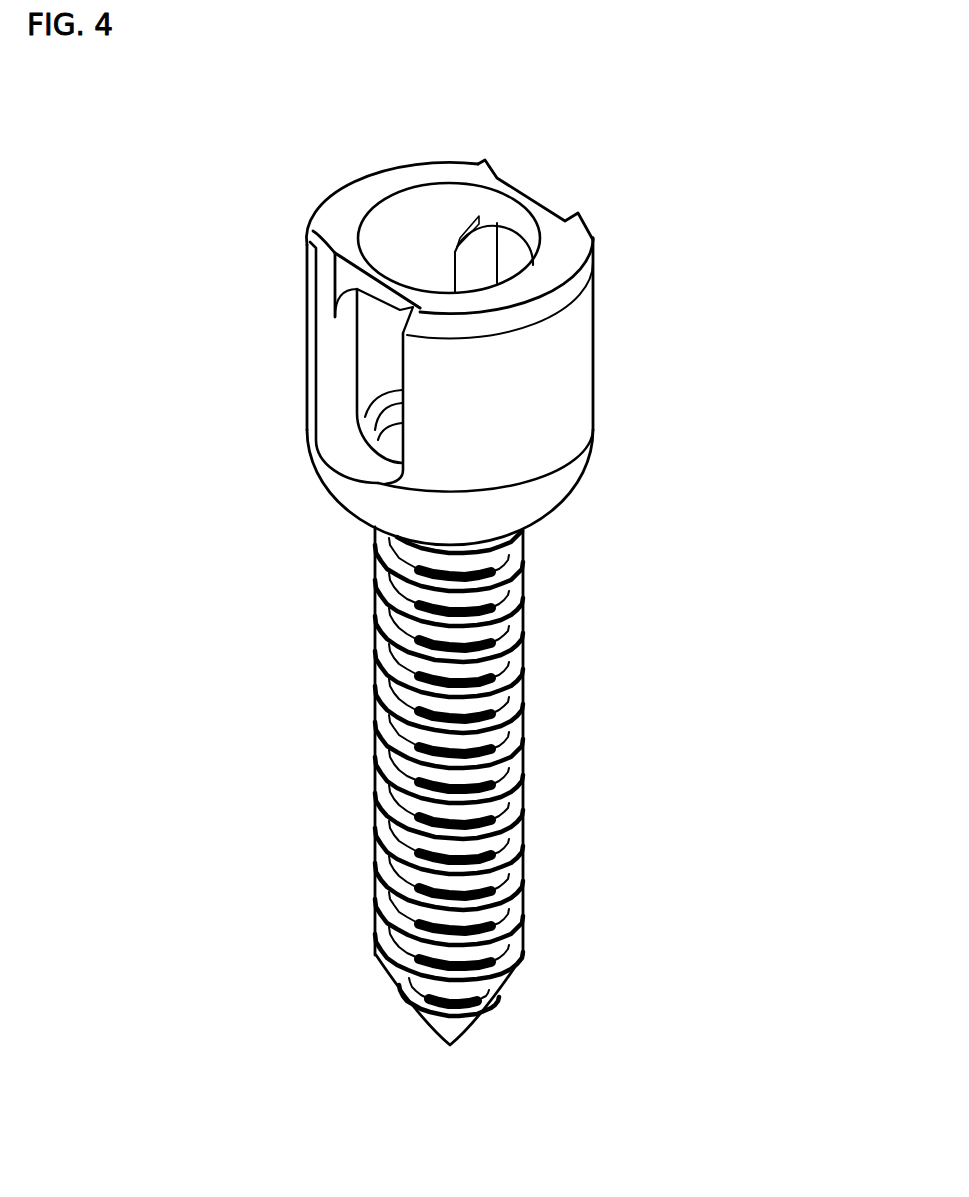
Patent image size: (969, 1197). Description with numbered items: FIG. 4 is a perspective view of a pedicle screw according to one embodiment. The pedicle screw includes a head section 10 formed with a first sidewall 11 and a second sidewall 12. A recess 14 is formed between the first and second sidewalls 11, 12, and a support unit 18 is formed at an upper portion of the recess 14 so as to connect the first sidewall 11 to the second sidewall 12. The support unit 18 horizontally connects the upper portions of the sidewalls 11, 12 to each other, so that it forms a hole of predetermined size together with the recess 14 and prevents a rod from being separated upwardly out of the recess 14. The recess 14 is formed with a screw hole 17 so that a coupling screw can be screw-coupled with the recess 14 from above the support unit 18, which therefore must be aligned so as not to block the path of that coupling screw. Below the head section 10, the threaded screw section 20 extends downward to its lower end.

The head section 10 is at (500, 328).
The first sidewall 11 is at (306, 332).
The second sidewall 12 is at (557, 382).
The recess 14 is at (335, 437).
The screw hole 17 is at (453, 190).
The support unit 18 is at (313, 231).
The screw section 20 is at (598, 737).